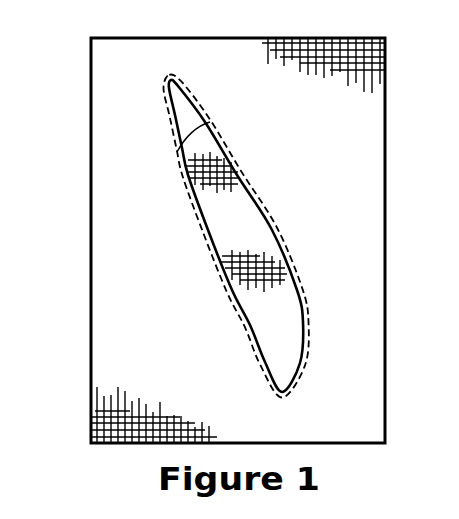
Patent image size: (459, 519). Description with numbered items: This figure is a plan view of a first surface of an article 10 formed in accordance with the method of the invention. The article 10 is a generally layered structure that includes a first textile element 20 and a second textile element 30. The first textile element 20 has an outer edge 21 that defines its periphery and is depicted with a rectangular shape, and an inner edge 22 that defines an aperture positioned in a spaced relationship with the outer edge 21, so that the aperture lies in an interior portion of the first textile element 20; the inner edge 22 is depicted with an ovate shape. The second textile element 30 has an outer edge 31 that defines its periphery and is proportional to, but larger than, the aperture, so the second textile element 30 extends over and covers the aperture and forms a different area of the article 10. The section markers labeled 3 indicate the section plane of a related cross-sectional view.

The article 10 is at (69, 116).
The first textile element 20 is at (103, 172).
The outer edge 21 is at (91, 325).
The inner edge 22 is at (187, 150).
The second textile element 30 is at (240, 208).
The outer edge 31 is at (250, 177).
The section line 3- 3 is at (197, 368).